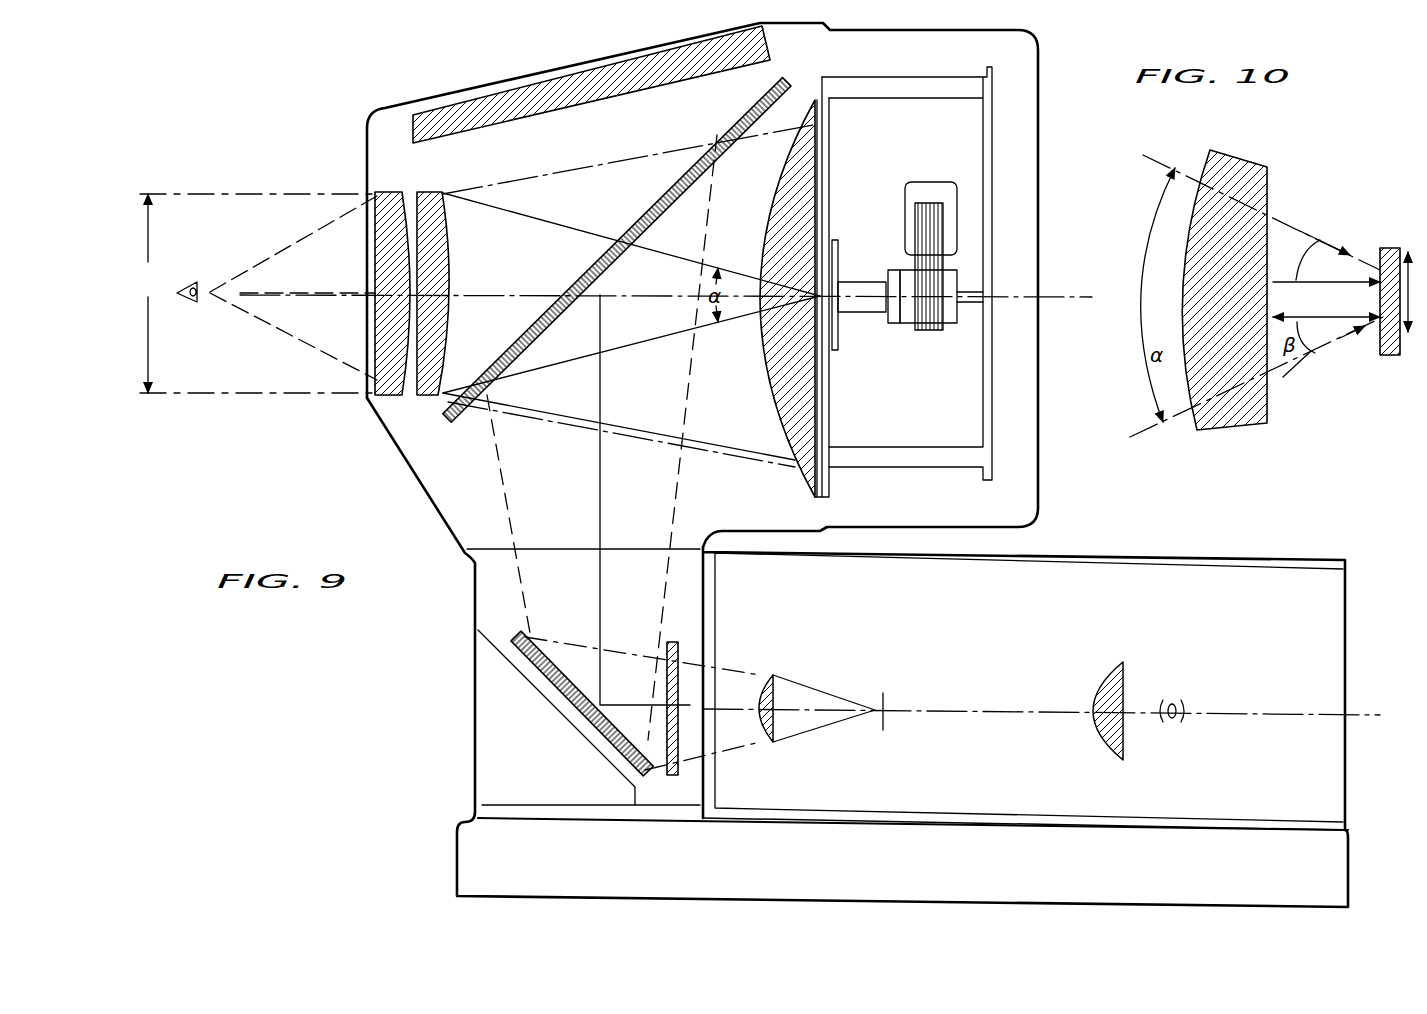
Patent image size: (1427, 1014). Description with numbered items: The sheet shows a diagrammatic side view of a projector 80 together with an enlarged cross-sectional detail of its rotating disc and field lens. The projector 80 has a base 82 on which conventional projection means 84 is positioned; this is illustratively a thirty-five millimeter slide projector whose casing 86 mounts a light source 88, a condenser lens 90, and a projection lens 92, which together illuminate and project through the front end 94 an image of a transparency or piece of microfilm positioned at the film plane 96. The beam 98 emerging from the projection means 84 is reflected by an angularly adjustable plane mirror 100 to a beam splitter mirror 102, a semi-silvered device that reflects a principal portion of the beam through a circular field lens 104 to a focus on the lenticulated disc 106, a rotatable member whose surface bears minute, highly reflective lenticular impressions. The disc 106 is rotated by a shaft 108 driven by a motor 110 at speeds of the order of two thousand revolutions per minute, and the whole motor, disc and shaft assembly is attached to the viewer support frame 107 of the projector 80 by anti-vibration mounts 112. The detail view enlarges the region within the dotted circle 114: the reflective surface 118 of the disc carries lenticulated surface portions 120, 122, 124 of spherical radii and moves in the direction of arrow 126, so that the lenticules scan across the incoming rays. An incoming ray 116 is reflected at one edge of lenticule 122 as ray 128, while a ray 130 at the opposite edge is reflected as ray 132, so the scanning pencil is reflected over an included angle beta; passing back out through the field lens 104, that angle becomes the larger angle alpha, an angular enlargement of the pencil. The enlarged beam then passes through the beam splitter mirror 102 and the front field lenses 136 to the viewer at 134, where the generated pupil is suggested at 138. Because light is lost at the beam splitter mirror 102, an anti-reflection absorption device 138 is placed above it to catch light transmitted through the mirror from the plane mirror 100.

In FIG. 9, the projector 80 is at (325, 440).
In FIG. 9, the base 82 is at (763, 833).
In FIG. 9, the conventional projection means 84 is at (1196, 552).
In FIG. 9, the casing 86 is at (1077, 553).
In FIG. 9, the light source 88 is at (1183, 707).
In FIG. 9, the condenser lens 90 is at (1107, 693).
In FIG. 9, the projection lens 92 is at (776, 683).
In FIG. 9, the front end 94 is at (665, 767).
In FIG. 9, the film plane 96 is at (886, 696).
In FIG. 9, the beam 98 is at (580, 663).
In FIG. 9, the plane mirror 100 is at (567, 683).
In FIG. 9, the beam splitter mirror 102 is at (497, 368).
In FIG. 9, the field lens 104 is at (790, 403).
In FIG. 10, the field lens 104 is at (1236, 177).
In FIG. 9, the lenticulated disc 106 is at (828, 188).
In FIG. 9, the viewer support frame 107 is at (474, 602).
In FIG. 9, the shaft 108 is at (873, 297).
In FIG. 9, the motor 110 is at (905, 312).
In FIG. 9, the anti-vibration mounts 112 is at (853, 86).
In FIG. 9, the dotted circle 114 is at (838, 285).
In FIG. 10, the ray 116 is at (1303, 325).
In FIG. 10, the reflective surface 118 is at (1382, 258).
In FIG. 10, the lenticulated surface portion 120 is at (1385, 338).
In FIG. 10, the lenticule 122 is at (1380, 283).
In FIG. 10, the lenticulated surface portion 124 is at (1378, 257).
In FIG. 10, the arrow 126 is at (1381, 306).
In FIG. 10, the reflected ray 128 is at (1323, 352).
In FIG. 10, the ray 130 is at (1290, 287).
In FIG. 10, the reflected ray 132 is at (1300, 230).
In FIG. 9, the viewer 134 is at (190, 302).
In FIG. 9, the front field lenses 136 is at (380, 372).
In FIG. 9, the anti-reflection (absorption) device 138 is at (617, 83).